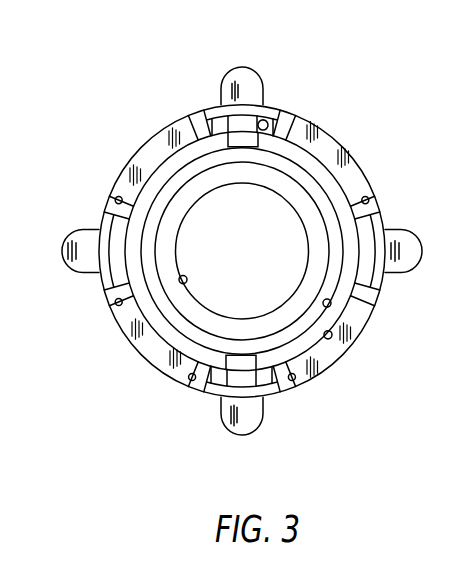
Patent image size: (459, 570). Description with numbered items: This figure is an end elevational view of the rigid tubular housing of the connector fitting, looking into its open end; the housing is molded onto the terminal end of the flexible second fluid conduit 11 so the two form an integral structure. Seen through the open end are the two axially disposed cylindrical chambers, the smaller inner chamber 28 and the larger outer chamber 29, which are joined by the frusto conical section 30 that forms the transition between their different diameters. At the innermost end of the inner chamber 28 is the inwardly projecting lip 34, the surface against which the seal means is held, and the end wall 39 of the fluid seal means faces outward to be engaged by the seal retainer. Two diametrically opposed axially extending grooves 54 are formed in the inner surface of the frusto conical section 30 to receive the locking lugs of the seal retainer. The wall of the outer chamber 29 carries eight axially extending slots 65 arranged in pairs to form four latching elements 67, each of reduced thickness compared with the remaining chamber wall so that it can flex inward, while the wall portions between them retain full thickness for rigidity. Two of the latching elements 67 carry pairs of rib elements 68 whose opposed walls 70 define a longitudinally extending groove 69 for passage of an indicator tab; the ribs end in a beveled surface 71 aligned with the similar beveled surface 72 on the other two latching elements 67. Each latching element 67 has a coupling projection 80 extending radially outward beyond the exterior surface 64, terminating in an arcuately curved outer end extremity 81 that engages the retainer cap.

The second fluid conduit 11 is at (183, 284).
The inner chamber 28 is at (331, 304).
The outer chamber 29 is at (331, 338).
The frusto conical section 30 is at (343, 196).
The inwardly projecting lip 34 is at (323, 201).
The end wall 39 is at (300, 192).
The axially extending grooves 54 is at (246, 149).
The exterior surface 64 is at (330, 138).
The axially extending slots 65 is at (369, 203).
The latching elements 67 is at (216, 125).
The rib elements 68 is at (268, 124).
The longitudinally extending groove 69 is at (272, 132).
The opposed walls 70 is at (259, 123).
The beveled surface 71 is at (203, 112).
The beveled surface 72 is at (118, 228).
The coupling projections 80 is at (252, 84).
The arcuately curved outer end extremity 81 is at (244, 118).